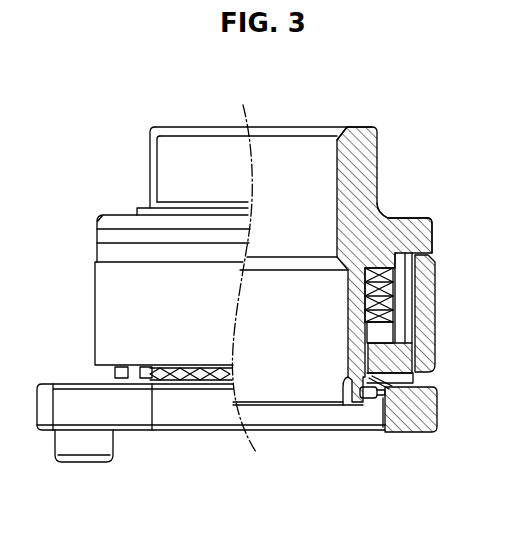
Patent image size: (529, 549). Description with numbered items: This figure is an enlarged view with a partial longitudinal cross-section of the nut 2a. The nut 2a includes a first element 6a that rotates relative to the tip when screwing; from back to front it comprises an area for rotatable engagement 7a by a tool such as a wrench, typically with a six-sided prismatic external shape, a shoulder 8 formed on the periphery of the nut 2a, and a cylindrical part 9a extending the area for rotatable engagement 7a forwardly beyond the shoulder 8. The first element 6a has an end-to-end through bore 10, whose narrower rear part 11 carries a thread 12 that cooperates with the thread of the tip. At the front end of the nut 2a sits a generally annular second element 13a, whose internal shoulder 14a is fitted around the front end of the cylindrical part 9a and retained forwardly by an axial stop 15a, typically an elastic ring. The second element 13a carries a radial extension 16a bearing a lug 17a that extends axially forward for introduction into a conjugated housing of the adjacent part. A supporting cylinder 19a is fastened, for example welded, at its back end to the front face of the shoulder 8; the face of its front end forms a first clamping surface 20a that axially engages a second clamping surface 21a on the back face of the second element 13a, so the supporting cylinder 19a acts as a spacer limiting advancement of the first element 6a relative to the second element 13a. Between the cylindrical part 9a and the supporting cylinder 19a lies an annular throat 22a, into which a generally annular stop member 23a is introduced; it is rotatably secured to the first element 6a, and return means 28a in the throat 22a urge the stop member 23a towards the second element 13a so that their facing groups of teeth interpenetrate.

The nut 2a is at (287, 113).
The thread 12 is at (332, 160).
The first element 6a is at (381, 159).
The area for rotatable engagement 7a is at (183, 167).
The return means 28a is at (384, 263).
The shoulder 8 is at (433, 234).
The supporting cylinder 19a is at (429, 282).
The throat 22a is at (398, 334).
The stop member 23a is at (410, 362).
The first clamping surface 20a is at (428, 372).
The second clamping surface 21a is at (427, 382).
The second element 13a is at (428, 410).
The rear part of the bore 11 is at (300, 213).
The through bore 10 is at (300, 336).
The radial extension 16a is at (58, 381).
The lug 17a is at (88, 468).
The cylindrical part 9a is at (345, 342).
The internal shoulder 14a is at (355, 385).
The axial stop 15a is at (384, 405).